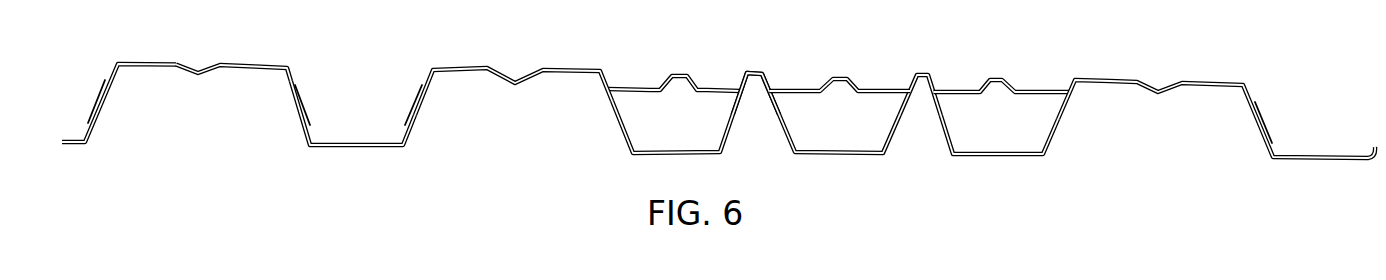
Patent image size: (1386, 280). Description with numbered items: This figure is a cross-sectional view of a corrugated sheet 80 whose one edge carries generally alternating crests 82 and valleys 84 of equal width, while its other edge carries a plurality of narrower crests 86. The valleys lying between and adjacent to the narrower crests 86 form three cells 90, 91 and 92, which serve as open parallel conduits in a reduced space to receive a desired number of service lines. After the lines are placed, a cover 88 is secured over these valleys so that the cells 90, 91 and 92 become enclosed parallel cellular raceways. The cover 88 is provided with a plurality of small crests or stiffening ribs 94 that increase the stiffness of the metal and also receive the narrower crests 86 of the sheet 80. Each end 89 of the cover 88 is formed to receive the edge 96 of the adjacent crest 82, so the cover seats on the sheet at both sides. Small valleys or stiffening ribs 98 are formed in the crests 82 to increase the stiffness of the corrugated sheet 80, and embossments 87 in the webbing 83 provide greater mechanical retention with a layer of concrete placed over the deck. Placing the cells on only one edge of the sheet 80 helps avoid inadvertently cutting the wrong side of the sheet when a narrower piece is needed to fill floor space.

The sheet 80 is at (718, 101).
The crests 82 is at (149, 68).
The webbing 83 is at (289, 69).
The valleys 84 is at (362, 147).
The narrower crests 86 is at (757, 80).
The embossments 87 is at (305, 102).
The cover 88 is at (779, 77).
The end of cover 89 is at (602, 68).
The cell 90 is at (696, 131).
The cell 91 is at (851, 133).
The cell 92 is at (1011, 135).
The stiffening ribs 94 is at (680, 75).
The edge of crest 96 is at (597, 83).
The stiffening ribs 98 is at (199, 70).